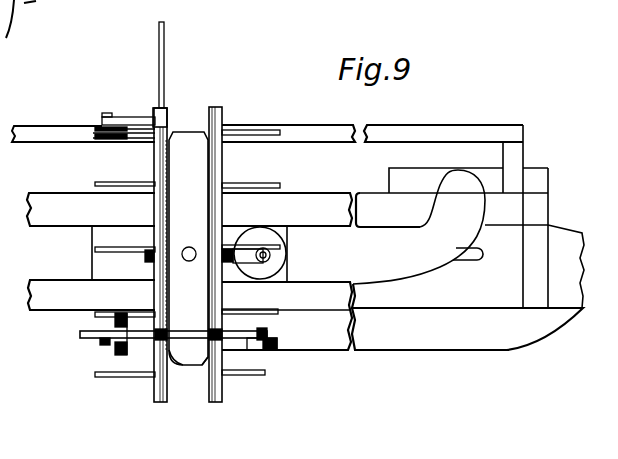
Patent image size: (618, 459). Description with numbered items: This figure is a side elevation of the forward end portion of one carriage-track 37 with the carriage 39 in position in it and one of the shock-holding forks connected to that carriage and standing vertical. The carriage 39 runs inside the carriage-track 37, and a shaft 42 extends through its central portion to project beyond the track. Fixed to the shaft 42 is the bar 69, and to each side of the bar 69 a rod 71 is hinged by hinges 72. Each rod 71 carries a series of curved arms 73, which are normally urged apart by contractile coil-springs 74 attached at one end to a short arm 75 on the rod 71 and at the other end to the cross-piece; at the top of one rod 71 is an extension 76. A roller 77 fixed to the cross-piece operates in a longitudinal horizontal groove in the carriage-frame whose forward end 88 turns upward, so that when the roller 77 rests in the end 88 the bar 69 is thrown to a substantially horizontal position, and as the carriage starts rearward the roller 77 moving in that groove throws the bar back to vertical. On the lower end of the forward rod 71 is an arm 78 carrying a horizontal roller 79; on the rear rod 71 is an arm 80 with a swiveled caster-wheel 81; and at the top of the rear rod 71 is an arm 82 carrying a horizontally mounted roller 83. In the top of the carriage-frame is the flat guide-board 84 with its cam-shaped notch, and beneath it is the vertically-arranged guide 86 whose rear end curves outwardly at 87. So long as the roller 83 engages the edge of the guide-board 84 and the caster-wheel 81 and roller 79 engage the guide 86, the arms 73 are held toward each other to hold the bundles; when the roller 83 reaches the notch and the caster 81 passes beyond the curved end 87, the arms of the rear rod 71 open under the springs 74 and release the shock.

The carriage-track 37 is at (189, 209).
The carriage 39 is at (287, 253).
The shaft 42 is at (187, 261).
The bar 69 is at (187, 248).
The rod 71 is at (156, 163).
The hinge 72 is at (205, 141).
The curved arm 73 is at (117, 185).
The contractile coil-spring 74 is at (146, 258).
The short arm 75 is at (148, 250).
The extension 76 is at (164, 62).
The roller 77 is at (271, 259).
The arm 78 is at (268, 334).
The roller 79 is at (279, 345).
The arm 80 is at (149, 337).
The caster-wheel 81 is at (104, 341).
The arm 82 is at (134, 111).
The roller 83 is at (107, 144).
The flat piece 84 is at (33, 131).
The vertically-arranged guide 86 is at (467, 317).
The outwardly-curved rear end 87 is at (95, 316).
The groove end 88 is at (419, 227).